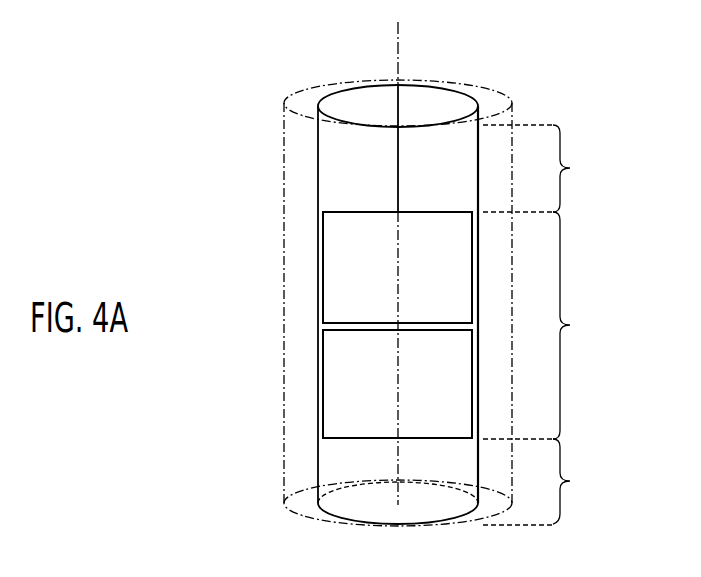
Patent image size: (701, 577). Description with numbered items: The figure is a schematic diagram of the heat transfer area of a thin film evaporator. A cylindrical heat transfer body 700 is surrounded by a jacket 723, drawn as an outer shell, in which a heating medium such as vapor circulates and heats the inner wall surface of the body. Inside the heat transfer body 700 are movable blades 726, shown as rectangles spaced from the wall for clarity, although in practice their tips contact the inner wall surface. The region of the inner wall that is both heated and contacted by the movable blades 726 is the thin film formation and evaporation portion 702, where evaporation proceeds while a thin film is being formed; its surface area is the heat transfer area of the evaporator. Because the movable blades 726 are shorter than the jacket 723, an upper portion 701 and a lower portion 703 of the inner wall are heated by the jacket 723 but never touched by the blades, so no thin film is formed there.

The heat transfer body 700 is at (422, 98).
The portion where no thin film is formed 701 is at (581, 168).
The thin film formation and evaporation portion 702 is at (581, 325).
The portion where no thin film is formed 703 is at (581, 481).
The jacket 723 is at (284, 192).
The movable blades 726 is at (341, 266).